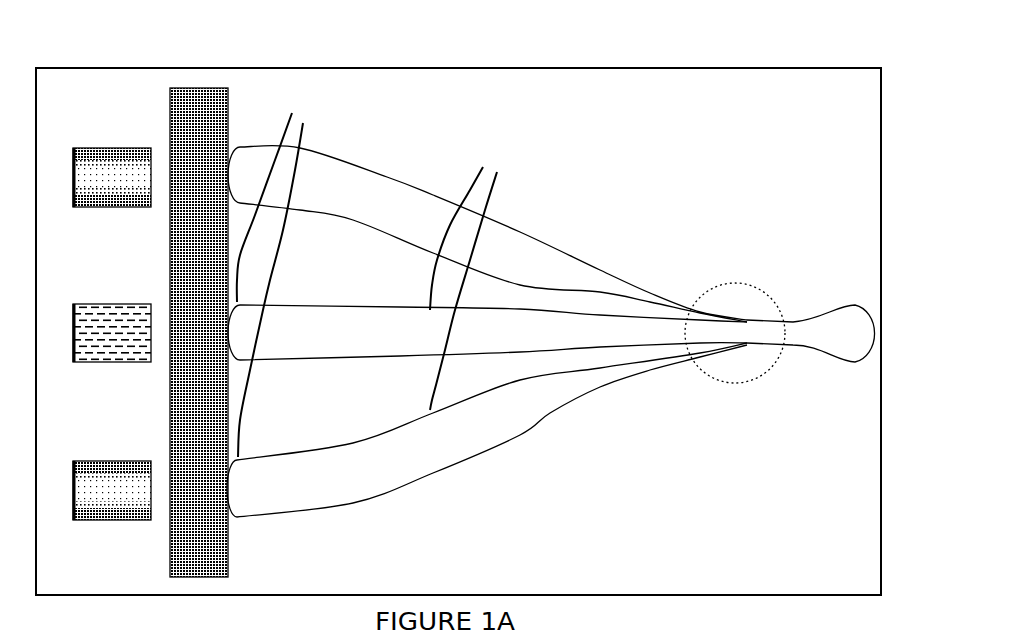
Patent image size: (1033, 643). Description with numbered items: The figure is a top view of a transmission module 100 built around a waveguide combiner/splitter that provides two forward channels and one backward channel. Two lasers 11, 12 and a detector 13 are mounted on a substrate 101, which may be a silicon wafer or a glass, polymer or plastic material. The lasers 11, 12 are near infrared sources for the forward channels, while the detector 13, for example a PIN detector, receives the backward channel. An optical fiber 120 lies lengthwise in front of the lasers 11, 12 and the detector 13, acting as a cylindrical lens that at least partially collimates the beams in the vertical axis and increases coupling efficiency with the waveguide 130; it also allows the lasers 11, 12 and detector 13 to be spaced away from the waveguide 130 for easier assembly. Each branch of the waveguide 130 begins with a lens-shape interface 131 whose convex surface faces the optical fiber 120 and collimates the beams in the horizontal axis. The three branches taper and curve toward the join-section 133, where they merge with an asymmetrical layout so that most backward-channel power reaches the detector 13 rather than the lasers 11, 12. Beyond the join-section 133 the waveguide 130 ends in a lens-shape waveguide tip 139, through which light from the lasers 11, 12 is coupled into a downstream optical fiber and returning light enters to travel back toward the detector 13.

The transmission module 100 is at (757, 28).
The substrate 101 is at (107, 33).
The optical fiber 120 is at (198, 88).
The laser 11 is at (77, 148).
The laser 12 is at (77, 461).
The detector 13 is at (77, 304).
The waveguide 130 is at (437, 194).
The lens-shape interfaces 131 is at (240, 148).
The join-section 133 is at (703, 292).
The lens-shape waveguide tip 139 is at (860, 303).